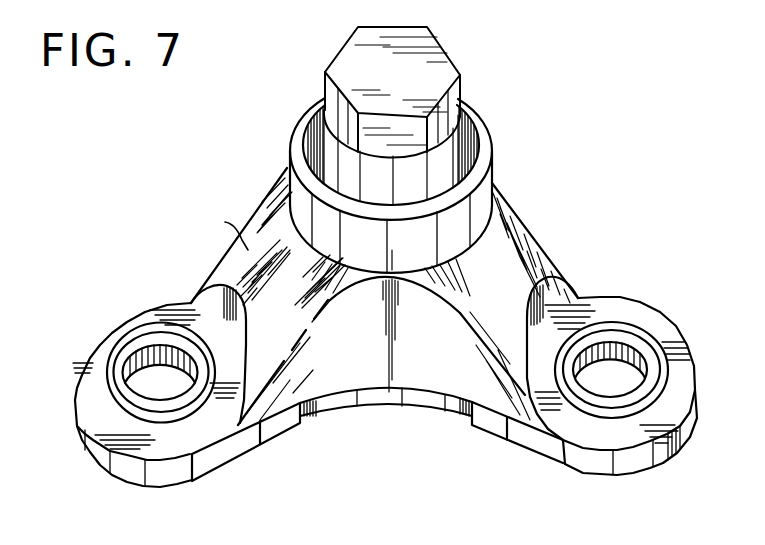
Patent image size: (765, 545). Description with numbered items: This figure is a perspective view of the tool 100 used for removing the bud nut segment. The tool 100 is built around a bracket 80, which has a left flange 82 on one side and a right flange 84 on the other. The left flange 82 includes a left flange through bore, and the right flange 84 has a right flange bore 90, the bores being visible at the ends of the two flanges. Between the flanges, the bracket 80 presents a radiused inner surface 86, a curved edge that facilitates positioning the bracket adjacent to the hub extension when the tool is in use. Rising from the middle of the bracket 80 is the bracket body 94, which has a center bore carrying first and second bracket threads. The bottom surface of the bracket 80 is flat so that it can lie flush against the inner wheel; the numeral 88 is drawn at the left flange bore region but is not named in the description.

The tool 100 is at (504, 86).
The bracket 80 is at (521, 216).
The left flange 82 is at (200, 460).
The right flange 84 is at (568, 445).
The radiused inner surface 86 is at (372, 378).
The first mounting lug 88 is at (143, 387).
The right flange bore 90 is at (625, 387).
The bracket body 94 is at (317, 118).